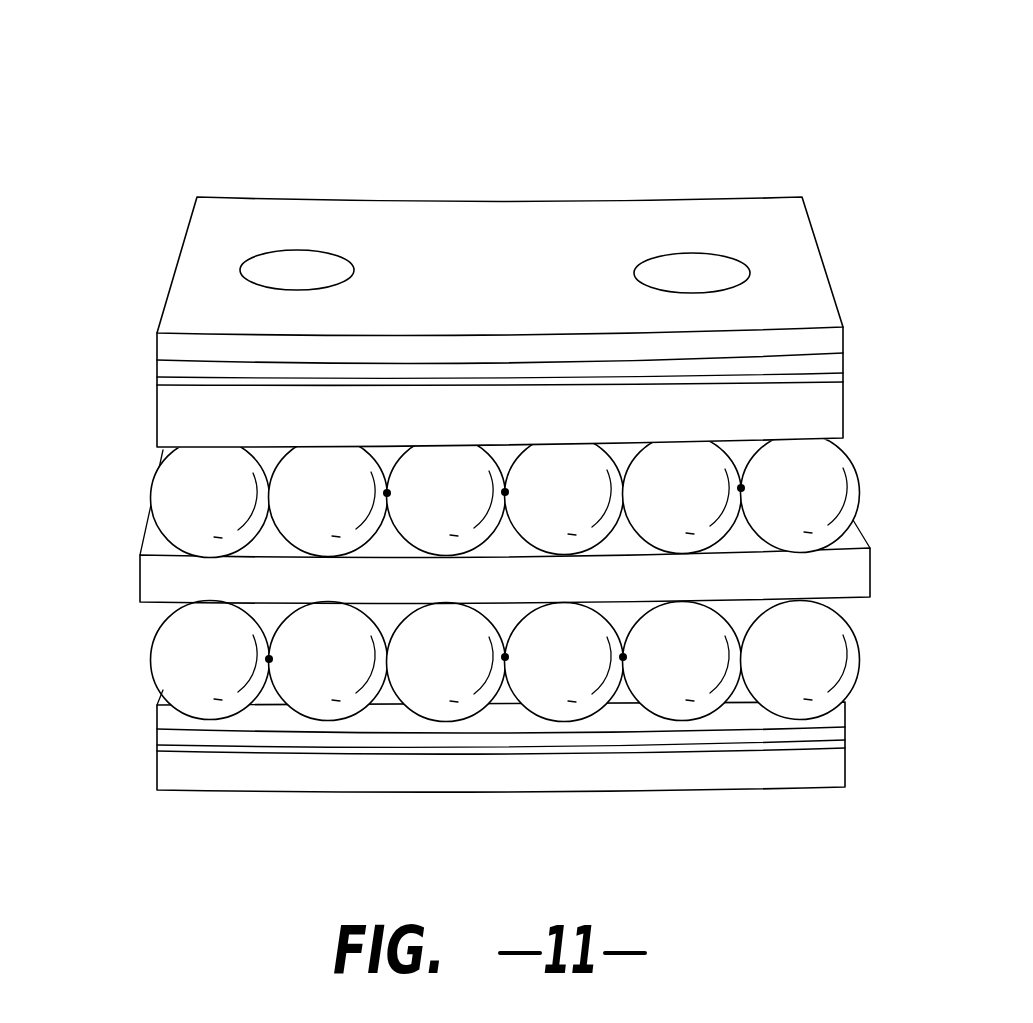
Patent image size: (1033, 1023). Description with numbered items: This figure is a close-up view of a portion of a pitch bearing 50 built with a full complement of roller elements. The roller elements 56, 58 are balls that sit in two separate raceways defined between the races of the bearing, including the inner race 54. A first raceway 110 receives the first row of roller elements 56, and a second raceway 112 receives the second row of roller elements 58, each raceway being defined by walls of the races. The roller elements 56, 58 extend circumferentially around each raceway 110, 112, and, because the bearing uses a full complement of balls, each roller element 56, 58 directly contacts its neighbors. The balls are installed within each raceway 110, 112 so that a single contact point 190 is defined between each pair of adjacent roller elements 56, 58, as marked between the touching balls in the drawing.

The pitch bearing 50 is at (448, 428).
The inner race 54 is at (472, 228).
The first row of roller elements 56 is at (293, 475).
The second row of roller elements 58 is at (323, 685).
The first raceway 110 is at (443, 474).
The second raceway 112 is at (443, 726).
The contact point 190 is at (387, 492).